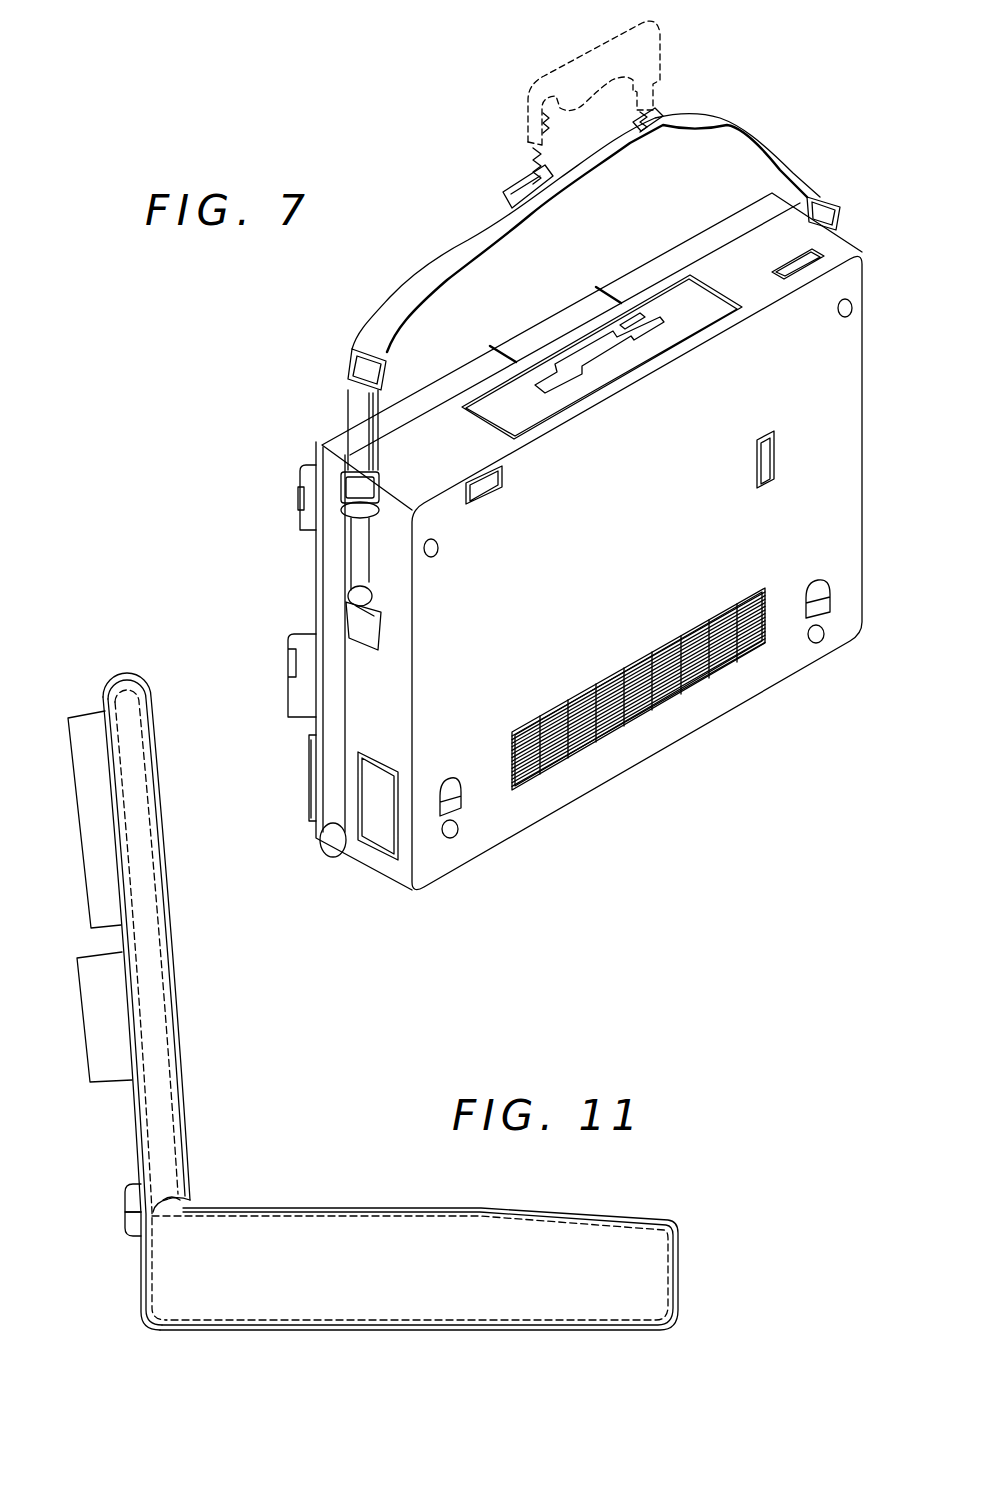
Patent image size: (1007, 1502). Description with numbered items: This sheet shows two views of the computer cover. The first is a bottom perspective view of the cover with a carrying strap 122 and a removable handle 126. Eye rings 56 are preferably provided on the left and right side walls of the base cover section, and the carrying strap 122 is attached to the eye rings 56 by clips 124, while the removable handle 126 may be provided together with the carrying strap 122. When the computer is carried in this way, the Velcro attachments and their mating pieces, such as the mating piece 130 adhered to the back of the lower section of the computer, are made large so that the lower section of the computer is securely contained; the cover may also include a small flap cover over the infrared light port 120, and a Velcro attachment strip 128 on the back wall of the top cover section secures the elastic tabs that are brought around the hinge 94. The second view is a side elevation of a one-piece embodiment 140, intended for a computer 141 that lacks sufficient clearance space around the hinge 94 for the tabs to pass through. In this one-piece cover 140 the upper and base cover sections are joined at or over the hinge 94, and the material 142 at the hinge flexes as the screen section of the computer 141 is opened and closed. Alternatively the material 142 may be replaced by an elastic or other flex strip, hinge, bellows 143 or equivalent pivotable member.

In FIG. 7, the infrared light port 120 is at (830, 258).
In FIG. 7, the carrying strap 122 is at (468, 248).
In FIG. 7, the clips 124 is at (362, 528).
In FIG. 7, the removable handle 126 is at (655, 64).
In FIG. 7, the eye rings 56 is at (372, 600).
In FIG. 11, the one-piece cover 140 is at (218, 833).
In FIG. 11, the computer 141 is at (334, 1236).
In FIG. 11, the Velcro attachment strip 128 is at (174, 1100).
In FIG. 11, the Velcro attachment 130 is at (186, 1142).
In FIG. 11, the hinge 94 is at (163, 1200).
In FIG. 11, the material at the hinge 142 is at (128, 1213).
In FIG. 11, the bellows 143 is at (125, 1197).